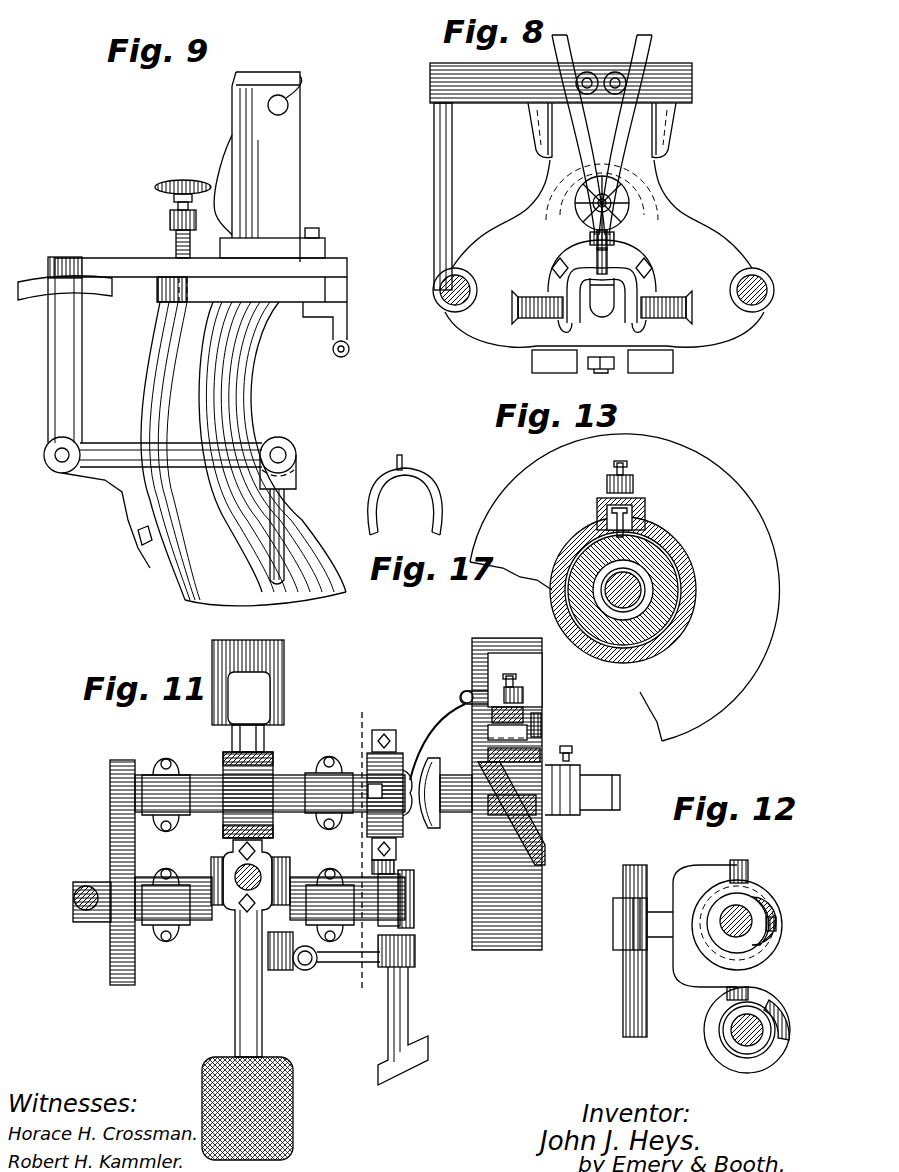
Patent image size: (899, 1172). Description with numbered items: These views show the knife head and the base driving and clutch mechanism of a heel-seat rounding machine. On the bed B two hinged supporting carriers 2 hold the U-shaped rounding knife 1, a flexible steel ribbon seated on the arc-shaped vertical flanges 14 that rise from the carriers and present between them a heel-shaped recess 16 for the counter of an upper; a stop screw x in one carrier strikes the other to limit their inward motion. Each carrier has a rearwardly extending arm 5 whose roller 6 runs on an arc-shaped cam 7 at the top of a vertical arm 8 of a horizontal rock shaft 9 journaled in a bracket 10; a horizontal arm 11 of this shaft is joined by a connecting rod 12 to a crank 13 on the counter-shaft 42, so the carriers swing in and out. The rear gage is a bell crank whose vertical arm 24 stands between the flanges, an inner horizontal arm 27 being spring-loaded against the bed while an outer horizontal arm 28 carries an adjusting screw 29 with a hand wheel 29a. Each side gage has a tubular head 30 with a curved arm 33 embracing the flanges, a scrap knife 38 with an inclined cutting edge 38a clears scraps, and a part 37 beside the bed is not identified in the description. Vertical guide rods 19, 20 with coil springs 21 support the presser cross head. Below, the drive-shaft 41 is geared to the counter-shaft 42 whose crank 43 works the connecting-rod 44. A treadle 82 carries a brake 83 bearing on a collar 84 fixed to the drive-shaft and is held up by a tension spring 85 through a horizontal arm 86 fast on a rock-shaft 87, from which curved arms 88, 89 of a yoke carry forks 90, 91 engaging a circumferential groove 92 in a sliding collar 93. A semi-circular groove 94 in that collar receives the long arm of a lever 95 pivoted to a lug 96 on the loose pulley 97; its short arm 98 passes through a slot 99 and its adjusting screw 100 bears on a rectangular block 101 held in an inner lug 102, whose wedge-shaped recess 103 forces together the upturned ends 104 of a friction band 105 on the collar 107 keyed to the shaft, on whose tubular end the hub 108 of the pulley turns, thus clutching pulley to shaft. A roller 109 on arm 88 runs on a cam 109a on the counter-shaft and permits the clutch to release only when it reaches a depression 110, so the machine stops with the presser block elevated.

In FIG. 8, the rounding knife 1 is at (622, 302).
In FIG. 17, the rounding knife 1 is at (432, 497).
In FIG. 9, the supporting carriers 2 is at (272, 243).
In FIG. 8, the supporting carriers 2 is at (658, 262).
In FIG. 9, the rearwardly extending arm 5 is at (110, 259).
In FIG. 8, the rearwardly extending arm 5 is at (660, 153).
In FIG. 9, the roller 6 is at (52, 278).
In FIG. 8, the roller 6 is at (614, 72).
In FIG. 9, the arc-shaped cam 7 is at (83, 288).
In FIG. 8, the arc-shaped cam 7 is at (640, 45).
In FIG. 9, the vertical arm 8 is at (67, 357).
In FIG. 8, the vertical arm 8 is at (647, 68).
In FIG. 9, the horizontal rock shaft 9 is at (62, 465).
In FIG. 8, the horizontal rock shaft 9 is at (428, 81).
In FIG. 9, the bracket 10 is at (116, 500).
In FIG. 8, the bracket 10 is at (663, 135).
In FIG. 9, the horizontal arm 11 is at (125, 445).
In FIG. 8, the horizontal arm 11 is at (452, 178).
In FIG. 9, the connecting rod 12 is at (290, 503).
In FIG. 11, the connecting rod 12 is at (86, 884).
In FIG. 11, the crank 13 is at (110, 920).
In FIG. 9, the vertical flange 14 is at (292, 170).
In FIG. 8, the vertical flange 14 is at (637, 290).
In FIG. 8, the heel-shaped recess 16 is at (593, 312).
In FIG. 8, the vertical guide rod 19 is at (752, 276).
In FIG. 8, the vertical guide rod 20 is at (440, 282).
In FIG. 8, the coil springs 21 is at (757, 313).
In FIG. 9, the vertical arm 24 is at (228, 158).
In FIG. 8, the inner horizontal arm 27 is at (603, 317).
In FIG. 9, the outer horizontal arm 28 is at (183, 221).
In FIG. 8, the outer horizontal arm 28 is at (614, 240).
In FIG. 9, the adjusting screw 29 is at (176, 243).
In FIG. 9, the hand wheel 29a is at (180, 182).
In FIG. 8, the hand wheel 29a is at (630, 200).
In FIG. 8, the tubular head 30 is at (660, 318).
In FIG. 8, the arm 33 is at (656, 333).
In FIG. 9, the stud 37 is at (349, 349).
In FIG. 8, the scrap knife 38 is at (596, 262).
In FIG. 17, the cutting edge 38a is at (419, 458).
In FIG. 13, the drive-shaft 41 is at (603, 595).
In FIG. 11, the drive-shaft 41 is at (215, 800).
In FIG. 12, the drive-shaft 41 is at (727, 935).
In FIG. 11, the counter-shaft 42 is at (184, 905).
In FIG. 11, the crank 43 is at (282, 860).
In FIG. 11, the connecting-rod 44 is at (243, 893).
In FIG. 11, the treadle 82 is at (295, 1078).
In FIG. 11, the brake 83 is at (228, 750).
In FIG. 11, the pulley or collar 84 is at (232, 770).
In FIG. 11, the tension spring 85 is at (307, 963).
In FIG. 11, the horizontal arm 86 is at (353, 953).
In FIG. 11, the rock-shaft 87 is at (410, 986).
In FIG. 12, the rock-shaft 87 is at (627, 987).
In FIG. 11, the curved arm 88 is at (398, 856).
In FIG. 12, the curved arm 88 is at (710, 977).
In FIG. 11, the curved arm 89 is at (372, 741).
In FIG. 12, the curved arm 89 is at (712, 864).
In FIG. 11, the fork 90 is at (372, 762).
In FIG. 12, the fork 90 is at (767, 942).
In FIG. 11, the fork 91 is at (380, 807).
In FIG. 12, the fork 91 is at (754, 900).
In FIG. 11, the circumferential groove 92 is at (366, 795).
In FIG. 12, the circumferential groove 92 is at (780, 918).
In FIG. 11, the collar 93 is at (386, 815).
In FIG. 12, the collar 93 is at (710, 898).
In FIG. 11, the semi-circular groove 94 is at (425, 820).
In FIG. 11, the lever 95 is at (452, 710).
In FIG. 11, the lug 96 is at (462, 694).
In FIG. 11, the loose pulley 97 is at (480, 748).
In FIG. 13, the short arm 98 is at (635, 482).
In FIG. 11, the short arm 98 is at (524, 695).
In FIG. 13, the slot 99 is at (605, 482).
In FIG. 11, the slot 99 is at (468, 690).
In FIG. 13, the adjusting screw 100 is at (637, 460).
In FIG. 11, the adjusting screw 100 is at (516, 681).
In FIG. 13, the rectangular block 101 is at (645, 498).
In FIG. 11, the rectangular block 101 is at (524, 714).
In FIG. 13, the inner lug 102 is at (642, 510).
In FIG. 11, the inner lug 102 is at (541, 735).
In FIG. 13, the wedge-shaped recess 103 is at (598, 517).
In FIG. 13, the upturned ends 104 is at (660, 530).
In FIG. 13, the friction band 105 is at (667, 560).
In FIG. 13, the collar 107 is at (694, 597).
In FIG. 11, the collar 107 is at (548, 754).
In FIG. 11, the hub 108 is at (545, 860).
In FIG. 11, the roller 109 is at (396, 870).
In FIG. 12, the roller 109 is at (748, 995).
In FIG. 11, the cam 109a is at (402, 890).
In FIG. 12, the cam 109a is at (710, 1032).
In FIG. 11, the depression 110 is at (404, 896).
In FIG. 12, the depression 110 is at (781, 1028).
In FIG. 9, the bed B is at (252, 308).
In FIG. 8, the stop screw x is at (600, 372).